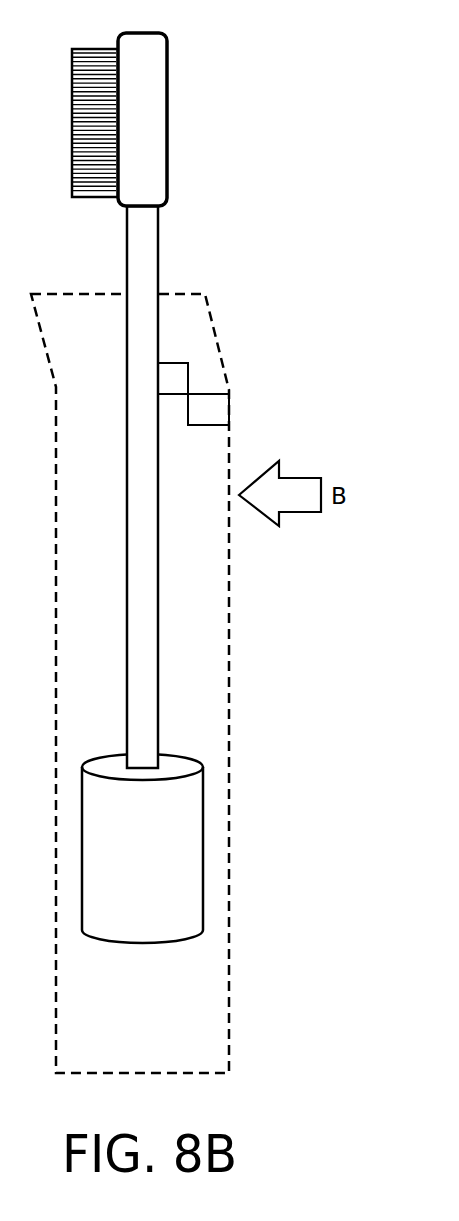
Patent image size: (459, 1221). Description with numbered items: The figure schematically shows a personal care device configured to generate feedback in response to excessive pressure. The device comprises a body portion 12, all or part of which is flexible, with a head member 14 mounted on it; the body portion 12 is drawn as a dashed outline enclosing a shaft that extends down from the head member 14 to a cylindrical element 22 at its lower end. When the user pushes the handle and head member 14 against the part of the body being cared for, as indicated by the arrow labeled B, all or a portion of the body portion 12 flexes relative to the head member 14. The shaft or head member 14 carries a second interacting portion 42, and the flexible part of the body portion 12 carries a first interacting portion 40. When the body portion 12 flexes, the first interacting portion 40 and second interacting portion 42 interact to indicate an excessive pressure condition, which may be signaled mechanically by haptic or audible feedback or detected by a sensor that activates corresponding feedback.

The body portion 12 is at (229, 688).
The head member 14 is at (168, 137).
The drive unit / motor 22 is at (203, 847).
The first interacting portion 40 is at (229, 410).
The second interacting portion 42 is at (188, 372).